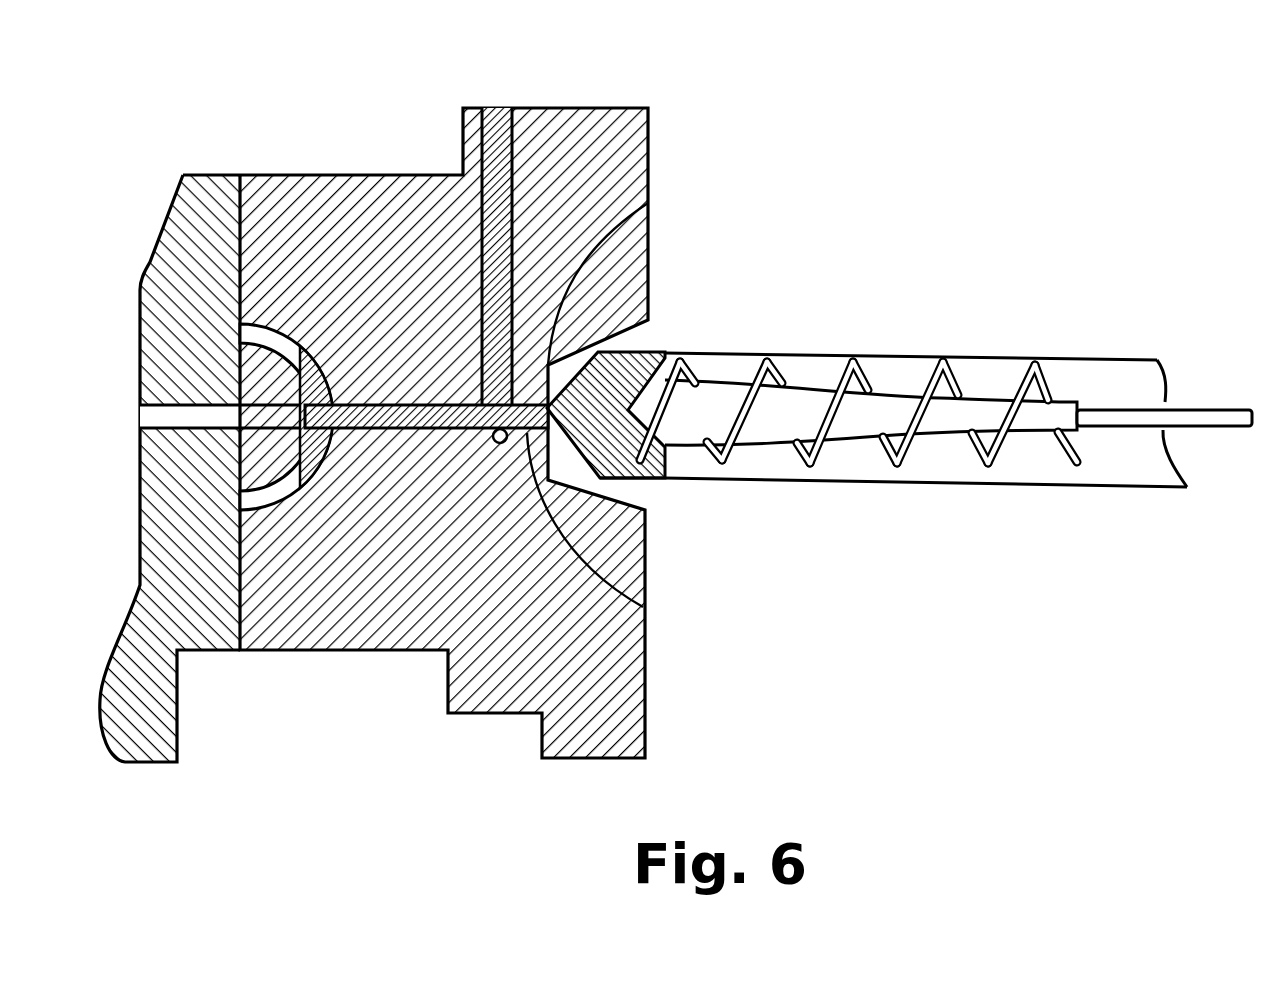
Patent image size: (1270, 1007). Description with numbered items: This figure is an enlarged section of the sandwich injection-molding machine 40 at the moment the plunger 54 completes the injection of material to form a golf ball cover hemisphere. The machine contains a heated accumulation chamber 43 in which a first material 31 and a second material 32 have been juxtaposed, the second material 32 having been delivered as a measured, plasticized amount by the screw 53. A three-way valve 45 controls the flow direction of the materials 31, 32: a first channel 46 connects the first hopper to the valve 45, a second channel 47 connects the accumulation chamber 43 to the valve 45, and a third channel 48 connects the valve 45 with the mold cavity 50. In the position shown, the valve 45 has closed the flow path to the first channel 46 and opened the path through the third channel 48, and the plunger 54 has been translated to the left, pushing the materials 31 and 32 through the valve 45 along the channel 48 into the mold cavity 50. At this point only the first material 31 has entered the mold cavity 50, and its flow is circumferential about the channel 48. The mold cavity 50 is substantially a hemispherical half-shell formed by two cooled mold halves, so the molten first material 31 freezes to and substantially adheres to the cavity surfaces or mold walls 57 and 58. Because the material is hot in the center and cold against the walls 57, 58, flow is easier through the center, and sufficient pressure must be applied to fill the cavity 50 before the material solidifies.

The sandwich injection-molding machine 40 is at (962, 245).
The first material 31 is at (303, 430).
The second material 32 is at (635, 480).
The accumulation chamber 43 is at (647, 352).
The three-way valve 45 is at (648, 202).
The first channel 46 is at (500, 108).
The second channel 47 is at (643, 607).
The third channel 48 is at (428, 445).
The mold cavity 50 is at (263, 330).
The screw 53 is at (768, 353).
The plunger 54 is at (1202, 418).
The mold wall 57 is at (345, 297).
The mold wall 58 is at (237, 368).